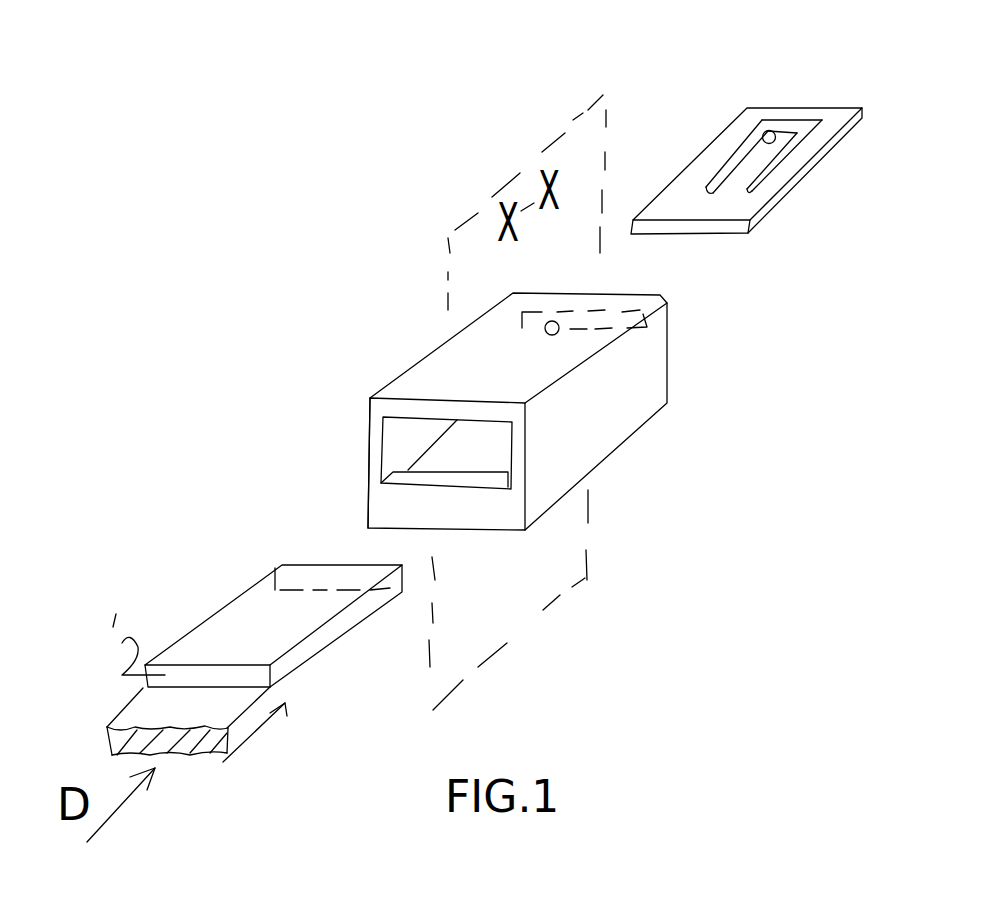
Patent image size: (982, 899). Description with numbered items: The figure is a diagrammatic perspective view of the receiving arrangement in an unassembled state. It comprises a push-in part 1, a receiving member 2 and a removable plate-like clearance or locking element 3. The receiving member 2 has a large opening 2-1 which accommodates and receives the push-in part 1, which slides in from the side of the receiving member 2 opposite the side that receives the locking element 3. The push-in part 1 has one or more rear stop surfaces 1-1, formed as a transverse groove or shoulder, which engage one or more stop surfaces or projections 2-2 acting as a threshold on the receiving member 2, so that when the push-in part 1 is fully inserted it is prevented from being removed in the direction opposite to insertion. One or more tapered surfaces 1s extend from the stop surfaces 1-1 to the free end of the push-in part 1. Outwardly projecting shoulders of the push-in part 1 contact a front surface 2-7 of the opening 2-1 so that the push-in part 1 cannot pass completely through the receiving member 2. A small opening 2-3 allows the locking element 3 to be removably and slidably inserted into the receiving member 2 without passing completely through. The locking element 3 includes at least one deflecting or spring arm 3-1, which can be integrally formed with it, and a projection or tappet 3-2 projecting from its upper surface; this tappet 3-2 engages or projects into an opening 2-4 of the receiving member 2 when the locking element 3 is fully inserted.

The push-in part 1 is at (323, 658).
The tapered surfaces 1s is at (255, 600).
The rear stop surface 1-1 is at (280, 710).
The receiving member 2 is at (607, 420).
The opening 2-1 is at (400, 438).
The stop surface or projection 2-2 is at (483, 478).
The small opening 2-3 is at (610, 322).
The opening 2-4 is at (554, 336).
The front surface 2-7 is at (390, 503).
The locking element 3 is at (808, 172).
The spring arm 3-1 is at (752, 158).
The projection or tappet 3-2 is at (762, 137).